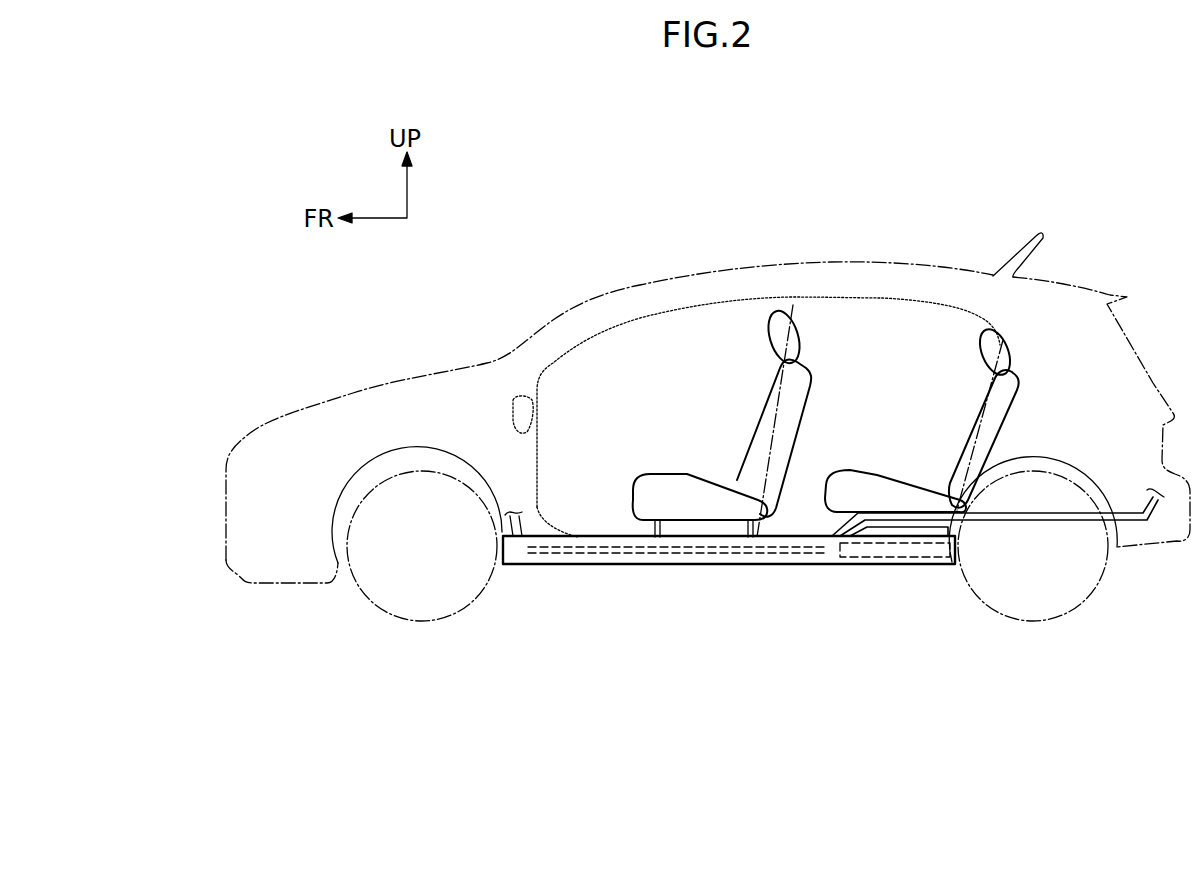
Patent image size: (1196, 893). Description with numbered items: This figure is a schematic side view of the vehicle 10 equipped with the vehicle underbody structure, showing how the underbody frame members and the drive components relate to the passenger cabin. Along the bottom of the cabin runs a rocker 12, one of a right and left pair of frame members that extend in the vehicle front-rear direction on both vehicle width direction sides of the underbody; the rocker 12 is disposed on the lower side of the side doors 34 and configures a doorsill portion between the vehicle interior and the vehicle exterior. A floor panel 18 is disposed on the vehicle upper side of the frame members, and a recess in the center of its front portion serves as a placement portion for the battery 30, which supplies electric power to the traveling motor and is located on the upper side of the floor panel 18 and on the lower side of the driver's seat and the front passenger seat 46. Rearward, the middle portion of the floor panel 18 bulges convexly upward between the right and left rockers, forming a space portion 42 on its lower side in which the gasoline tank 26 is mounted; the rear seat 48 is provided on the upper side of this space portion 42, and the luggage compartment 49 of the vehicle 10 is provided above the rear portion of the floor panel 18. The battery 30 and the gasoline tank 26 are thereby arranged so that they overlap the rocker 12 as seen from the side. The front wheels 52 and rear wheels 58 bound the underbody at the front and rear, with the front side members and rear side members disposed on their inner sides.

The vehicle 10 is at (258, 656).
The rocker 12 is at (557, 566).
The floor panel 18 is at (1040, 513).
The gasoline tank 26 is at (886, 512).
The battery 30 is at (693, 518).
The side door 34 is at (640, 318).
The space portion 42 is at (927, 508).
The front passenger seat 46 is at (798, 341).
The rear seat 48 is at (1008, 357).
The luggage compartment 49 is at (1109, 414).
The front wheel 52 is at (418, 622).
The rear wheel 58 is at (1033, 622).